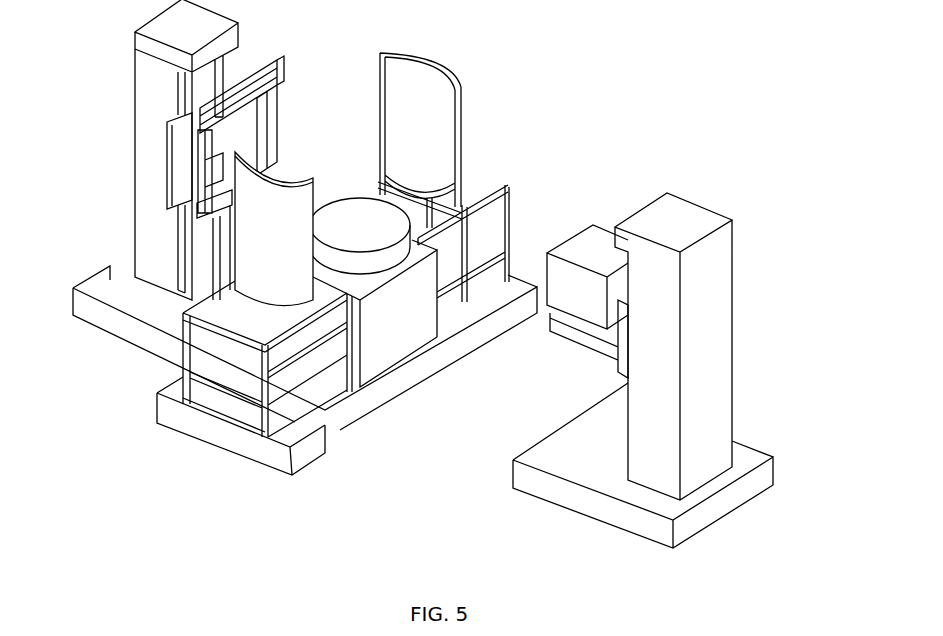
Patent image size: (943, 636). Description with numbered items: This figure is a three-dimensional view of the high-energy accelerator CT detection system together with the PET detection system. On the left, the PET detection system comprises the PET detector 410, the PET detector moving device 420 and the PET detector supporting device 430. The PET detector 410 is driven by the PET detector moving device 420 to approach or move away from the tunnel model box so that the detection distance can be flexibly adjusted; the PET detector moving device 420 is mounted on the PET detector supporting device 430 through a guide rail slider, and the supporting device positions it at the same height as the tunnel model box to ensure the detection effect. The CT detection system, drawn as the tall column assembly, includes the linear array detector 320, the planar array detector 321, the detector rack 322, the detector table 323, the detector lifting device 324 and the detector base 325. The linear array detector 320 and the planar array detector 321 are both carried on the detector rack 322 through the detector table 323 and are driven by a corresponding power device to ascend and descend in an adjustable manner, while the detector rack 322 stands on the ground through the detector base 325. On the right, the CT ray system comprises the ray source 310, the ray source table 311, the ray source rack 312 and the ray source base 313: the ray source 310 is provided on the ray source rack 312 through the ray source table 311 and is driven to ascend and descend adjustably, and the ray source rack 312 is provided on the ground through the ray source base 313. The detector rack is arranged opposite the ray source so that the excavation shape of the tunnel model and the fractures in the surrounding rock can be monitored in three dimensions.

The ray source 310 is at (578, 293).
The ray source table 311 is at (590, 342).
The ray source rack 312 is at (660, 400).
The ray source base 313 is at (635, 528).
The linear array detector 320 is at (243, 98).
The planar array detector 321 is at (247, 147).
The detector rack 322 is at (155, 183).
The detector table 323 is at (187, 215).
The detector lifting device 324 is at (185, 272).
The detector base 325 is at (143, 325).
The PET detector 410 is at (282, 222).
The PET detector moving device 420 is at (240, 318).
The PET detector supporting device 430 is at (223, 343).